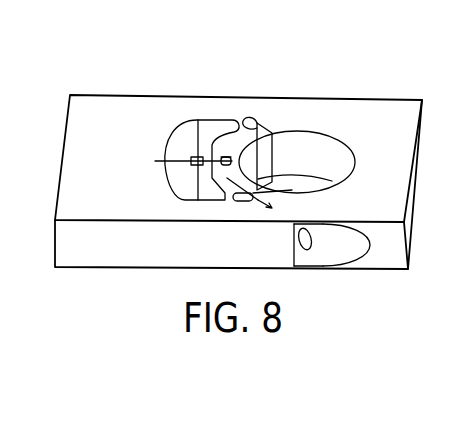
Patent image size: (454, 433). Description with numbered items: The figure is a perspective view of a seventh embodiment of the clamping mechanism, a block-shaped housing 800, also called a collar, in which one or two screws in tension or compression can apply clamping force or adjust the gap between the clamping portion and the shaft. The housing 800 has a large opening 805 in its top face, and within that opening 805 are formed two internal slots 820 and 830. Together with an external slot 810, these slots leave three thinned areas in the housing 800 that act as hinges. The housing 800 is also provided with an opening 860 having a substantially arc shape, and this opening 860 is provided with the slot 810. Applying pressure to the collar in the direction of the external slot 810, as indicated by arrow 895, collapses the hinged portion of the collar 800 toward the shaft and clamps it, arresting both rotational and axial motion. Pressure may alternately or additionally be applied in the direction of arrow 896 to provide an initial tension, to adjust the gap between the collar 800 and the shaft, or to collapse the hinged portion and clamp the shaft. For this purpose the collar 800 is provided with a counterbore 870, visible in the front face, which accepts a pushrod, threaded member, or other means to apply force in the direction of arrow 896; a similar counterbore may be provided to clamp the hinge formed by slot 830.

The housing 800 is at (137, 95).
The opening 805 is at (298, 180).
The external slot 810 is at (222, 156).
The internal slot 820 is at (243, 198).
The internal slot 830 is at (253, 117).
The opening 860 is at (197, 180).
The counterbore 870 is at (310, 252).
The arrow 895 is at (172, 158).
The arrow 896 is at (247, 203).